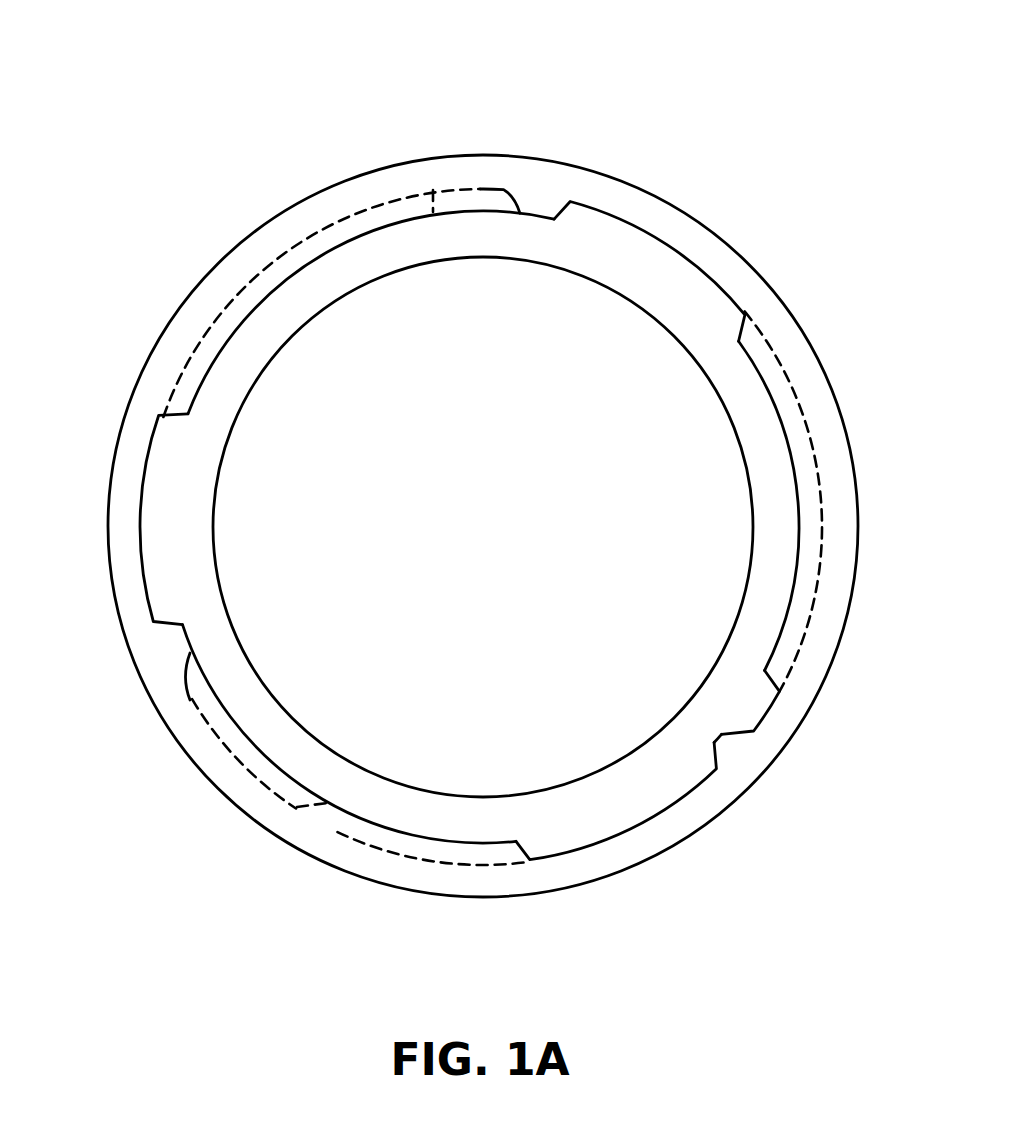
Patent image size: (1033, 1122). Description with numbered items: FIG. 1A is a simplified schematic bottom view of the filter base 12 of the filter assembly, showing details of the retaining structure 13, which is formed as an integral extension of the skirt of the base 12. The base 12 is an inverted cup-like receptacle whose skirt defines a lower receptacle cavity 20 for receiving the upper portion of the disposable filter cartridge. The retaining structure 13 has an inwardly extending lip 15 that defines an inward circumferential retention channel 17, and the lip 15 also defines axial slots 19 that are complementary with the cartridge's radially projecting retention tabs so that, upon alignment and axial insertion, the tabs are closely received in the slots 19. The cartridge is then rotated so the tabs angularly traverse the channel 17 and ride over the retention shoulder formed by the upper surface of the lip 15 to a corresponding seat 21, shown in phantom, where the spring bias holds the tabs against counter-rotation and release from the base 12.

The filter base 12 is at (483, 502).
The retaining structure 13 is at (332, 186).
The lip 15 is at (170, 636).
The retention channel 17 is at (267, 270).
The axial slots 19 is at (668, 252).
The receptacle cavity 20 is at (753, 501).
The seat 21 is at (433, 212).